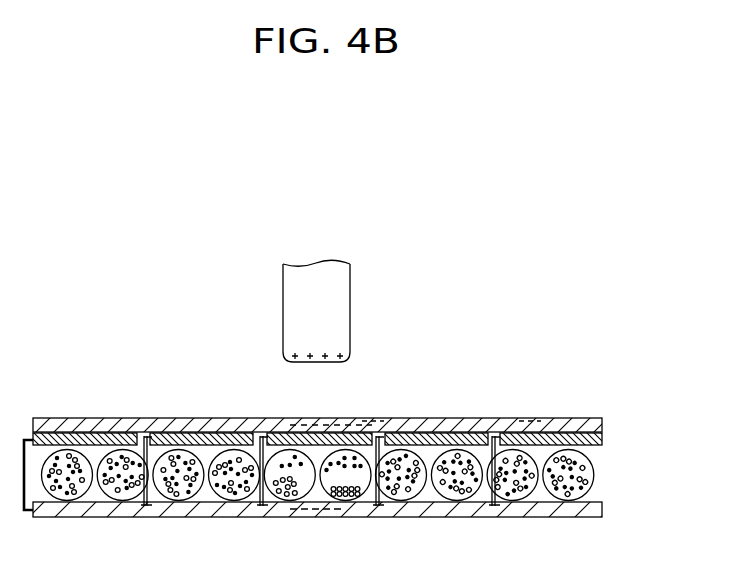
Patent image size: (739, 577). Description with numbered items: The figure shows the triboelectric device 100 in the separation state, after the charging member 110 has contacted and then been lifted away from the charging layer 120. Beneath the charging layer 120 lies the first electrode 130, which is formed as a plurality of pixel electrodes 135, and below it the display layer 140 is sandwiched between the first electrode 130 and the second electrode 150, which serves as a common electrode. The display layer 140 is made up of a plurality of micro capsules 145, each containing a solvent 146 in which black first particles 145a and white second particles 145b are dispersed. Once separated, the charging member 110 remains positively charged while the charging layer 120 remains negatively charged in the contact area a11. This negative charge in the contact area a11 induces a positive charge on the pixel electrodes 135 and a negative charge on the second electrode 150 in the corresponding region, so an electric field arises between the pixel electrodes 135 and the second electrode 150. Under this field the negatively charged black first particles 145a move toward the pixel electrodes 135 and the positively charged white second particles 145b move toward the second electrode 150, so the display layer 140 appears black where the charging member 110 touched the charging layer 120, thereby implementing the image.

The triboelectric device 100 is at (363, 418).
The charging member 110 is at (350, 282).
The charging layer 120 is at (602, 424).
The first electrode 130 is at (612, 443).
The pixel electrodes 135 is at (373, 417).
The contact area a11 is at (280, 417).
The display layer 140 is at (366, 506).
The micro capsules 145 is at (316, 505).
The first particles 145a is at (326, 468).
The second particles 145b is at (363, 490).
The solvent 146 is at (72, 495).
The second electrode 150 is at (602, 507).